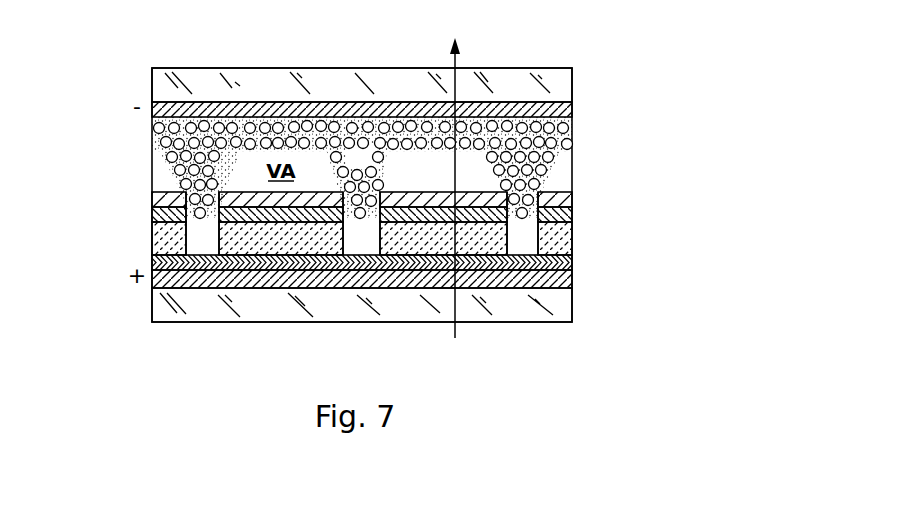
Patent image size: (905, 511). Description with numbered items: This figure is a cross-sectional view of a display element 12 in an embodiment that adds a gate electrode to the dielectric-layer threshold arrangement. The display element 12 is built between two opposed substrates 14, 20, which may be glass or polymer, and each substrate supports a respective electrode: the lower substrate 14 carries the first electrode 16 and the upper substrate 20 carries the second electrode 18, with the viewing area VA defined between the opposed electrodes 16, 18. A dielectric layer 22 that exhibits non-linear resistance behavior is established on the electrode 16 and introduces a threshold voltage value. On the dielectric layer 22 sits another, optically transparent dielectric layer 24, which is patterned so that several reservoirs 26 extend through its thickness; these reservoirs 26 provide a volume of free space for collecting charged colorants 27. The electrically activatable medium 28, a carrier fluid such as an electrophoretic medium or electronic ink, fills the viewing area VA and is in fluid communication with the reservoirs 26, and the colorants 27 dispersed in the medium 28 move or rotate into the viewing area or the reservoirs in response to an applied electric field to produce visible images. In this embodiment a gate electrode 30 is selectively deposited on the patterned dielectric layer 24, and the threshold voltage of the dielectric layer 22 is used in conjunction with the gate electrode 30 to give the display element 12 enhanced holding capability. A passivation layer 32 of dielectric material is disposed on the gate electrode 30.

The display element 12 is at (626, 106).
The substrate 14 is at (562, 306).
The first electrode 16 is at (165, 283).
The second electrode 18 is at (152, 118).
The substrate 20 is at (175, 88).
The dielectric layer 22 is at (195, 263).
The dielectric layer 24 is at (273, 247).
The reservoir 26 is at (376, 255).
The colorant 27 is at (359, 236).
The electrically activatable medium 28 is at (374, 168).
The gate electrode 30 is at (162, 204).
The passivation layer 32 is at (557, 193).